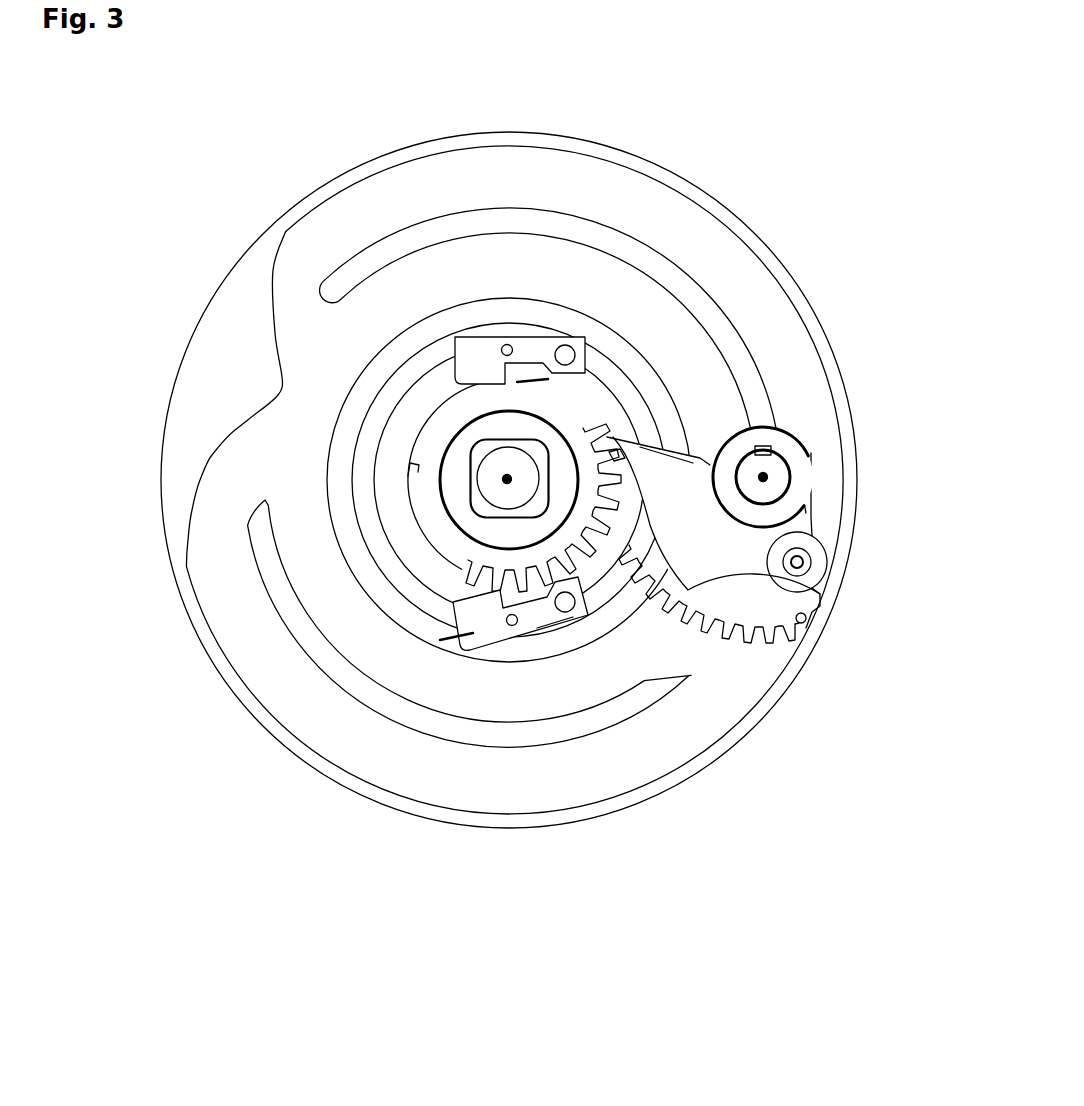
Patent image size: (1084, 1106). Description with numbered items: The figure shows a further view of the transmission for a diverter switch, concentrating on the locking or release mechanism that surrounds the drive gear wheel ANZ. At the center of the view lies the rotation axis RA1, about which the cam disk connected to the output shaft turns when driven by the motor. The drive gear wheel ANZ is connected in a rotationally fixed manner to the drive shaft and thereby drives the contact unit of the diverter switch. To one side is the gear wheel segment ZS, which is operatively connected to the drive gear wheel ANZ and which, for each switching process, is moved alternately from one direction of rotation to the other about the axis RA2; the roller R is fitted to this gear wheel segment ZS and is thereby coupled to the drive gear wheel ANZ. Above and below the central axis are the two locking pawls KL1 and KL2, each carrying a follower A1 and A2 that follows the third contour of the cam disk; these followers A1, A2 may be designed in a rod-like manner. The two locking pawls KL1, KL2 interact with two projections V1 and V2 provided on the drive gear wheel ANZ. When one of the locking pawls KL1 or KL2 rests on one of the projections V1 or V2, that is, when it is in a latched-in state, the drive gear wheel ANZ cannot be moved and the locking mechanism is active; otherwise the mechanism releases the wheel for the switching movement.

The follower A1 is at (512, 349).
The follower A2 is at (512, 624).
The locking pawl KL1 is at (556, 343).
The locking pawl KL2 is at (470, 634).
The projection V1 is at (530, 381).
The projection V2 is at (412, 476).
The rotation axis RA1 is at (512, 481).
The axis RA2 is at (768, 478).
The gear wheel segment ZS is at (700, 550).
The roller R is at (800, 563).
The drive gear wheel ANZ is at (437, 540).